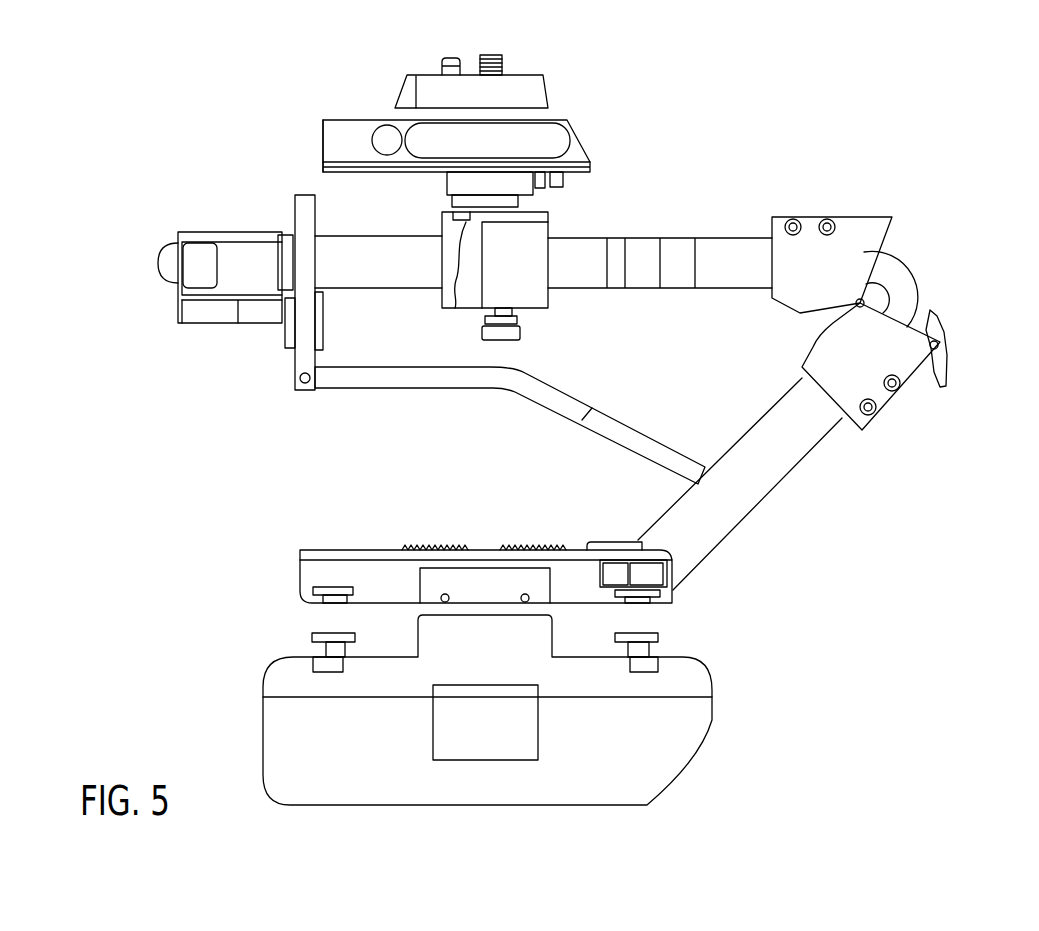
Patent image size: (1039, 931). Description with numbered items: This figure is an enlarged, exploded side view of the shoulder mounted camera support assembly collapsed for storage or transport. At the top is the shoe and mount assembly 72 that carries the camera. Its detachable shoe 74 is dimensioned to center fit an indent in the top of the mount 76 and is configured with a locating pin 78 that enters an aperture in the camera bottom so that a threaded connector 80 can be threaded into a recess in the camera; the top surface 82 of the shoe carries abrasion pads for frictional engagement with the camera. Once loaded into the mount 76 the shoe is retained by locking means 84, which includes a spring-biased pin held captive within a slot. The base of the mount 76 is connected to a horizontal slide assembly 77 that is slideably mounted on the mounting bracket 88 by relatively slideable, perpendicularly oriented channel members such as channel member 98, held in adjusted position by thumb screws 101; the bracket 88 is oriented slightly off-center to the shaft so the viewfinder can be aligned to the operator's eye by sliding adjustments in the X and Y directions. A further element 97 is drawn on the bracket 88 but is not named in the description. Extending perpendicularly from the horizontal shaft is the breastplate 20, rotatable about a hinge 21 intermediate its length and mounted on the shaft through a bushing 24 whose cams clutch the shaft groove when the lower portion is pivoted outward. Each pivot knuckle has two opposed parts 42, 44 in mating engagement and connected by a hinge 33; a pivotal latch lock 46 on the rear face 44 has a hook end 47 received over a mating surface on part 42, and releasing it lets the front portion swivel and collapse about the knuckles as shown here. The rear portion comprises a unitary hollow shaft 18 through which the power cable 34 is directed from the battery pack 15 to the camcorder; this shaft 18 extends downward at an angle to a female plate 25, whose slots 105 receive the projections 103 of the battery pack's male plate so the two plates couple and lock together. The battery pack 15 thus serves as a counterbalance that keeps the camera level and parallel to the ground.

The battery pack 15 is at (268, 728).
The hollow shaft 18 is at (792, 450).
The breastplate 20 is at (368, 392).
The hinge 21 is at (300, 378).
The bushing 24 is at (297, 195).
The female plate 25 is at (310, 575).
The hinge 33 is at (805, 312).
The power cable 34 is at (910, 273).
The knuckle part 42 is at (255, 232).
The knuckle part 44 is at (205, 318).
The pivotal latch lock 46 is at (160, 255).
The hook end 47 is at (932, 307).
The shoe and mount assembly 72 is at (317, 112).
The shoe 74 is at (545, 74).
The mount 76 is at (576, 112).
The horizontal slide assembly 77 is at (591, 174).
The locating pin 78 is at (445, 57).
The threaded connector 80 is at (502, 60).
The top surface of the shoe 82 is at (400, 84).
The locking means 84 is at (385, 128).
The mounting bracket 88 is at (442, 225).
The cam 97 is at (470, 305).
The channel member 98 is at (460, 190).
The thumb screw 101 is at (522, 335).
The projections 103 is at (660, 640).
The slots 105 is at (640, 606).